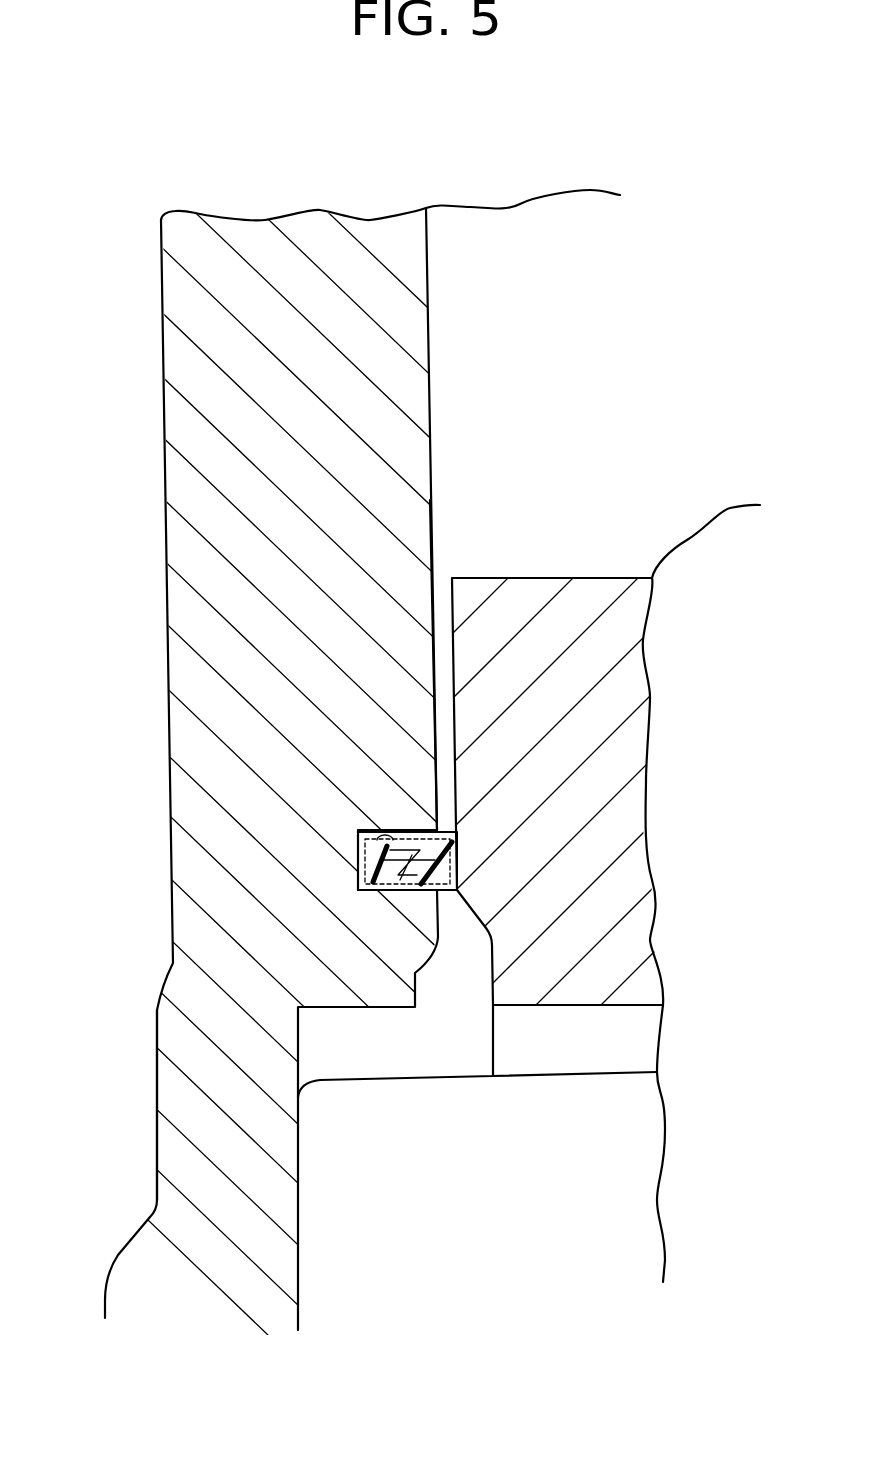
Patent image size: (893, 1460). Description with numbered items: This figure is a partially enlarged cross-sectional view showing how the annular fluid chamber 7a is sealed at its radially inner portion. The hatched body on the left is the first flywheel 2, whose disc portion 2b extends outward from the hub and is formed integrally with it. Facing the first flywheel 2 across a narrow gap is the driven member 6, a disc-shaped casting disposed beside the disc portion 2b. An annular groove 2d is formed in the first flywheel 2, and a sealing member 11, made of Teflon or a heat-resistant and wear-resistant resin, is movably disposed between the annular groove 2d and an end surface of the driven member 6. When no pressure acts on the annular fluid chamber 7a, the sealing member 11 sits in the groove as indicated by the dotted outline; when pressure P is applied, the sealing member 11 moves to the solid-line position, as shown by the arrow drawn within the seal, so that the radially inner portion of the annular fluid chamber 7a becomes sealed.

The first flywheel 2 is at (150, 1065).
The disc portion 2b is at (202, 698).
The annular groove 2d is at (373, 833).
The driven member 6 is at (582, 735).
The annular fluid chamber 7a is at (558, 365).
The sealing member 11 is at (443, 870).
The pressure P is at (447, 568).